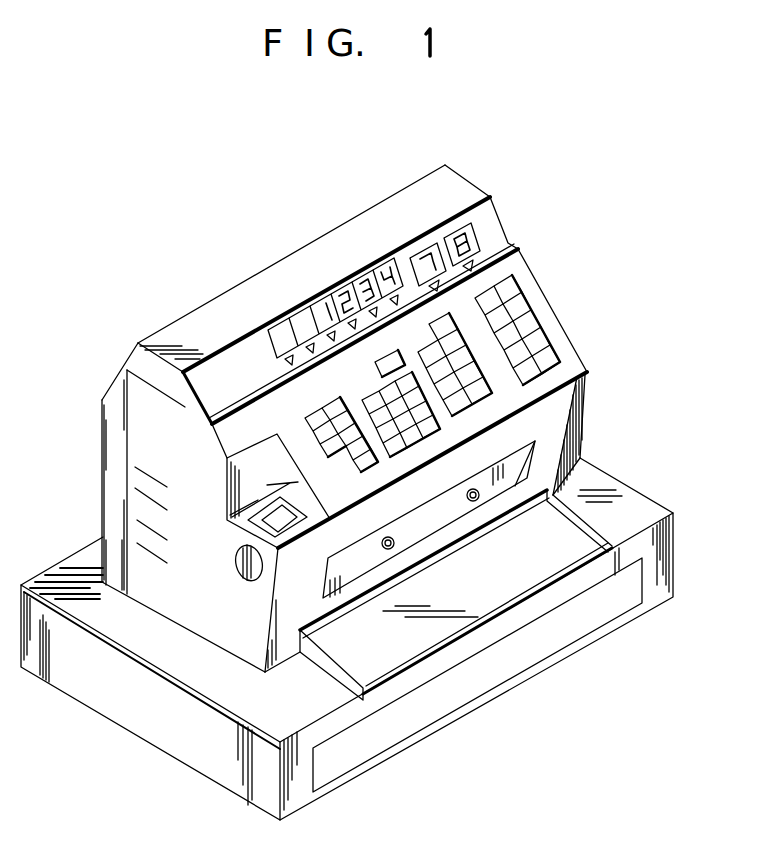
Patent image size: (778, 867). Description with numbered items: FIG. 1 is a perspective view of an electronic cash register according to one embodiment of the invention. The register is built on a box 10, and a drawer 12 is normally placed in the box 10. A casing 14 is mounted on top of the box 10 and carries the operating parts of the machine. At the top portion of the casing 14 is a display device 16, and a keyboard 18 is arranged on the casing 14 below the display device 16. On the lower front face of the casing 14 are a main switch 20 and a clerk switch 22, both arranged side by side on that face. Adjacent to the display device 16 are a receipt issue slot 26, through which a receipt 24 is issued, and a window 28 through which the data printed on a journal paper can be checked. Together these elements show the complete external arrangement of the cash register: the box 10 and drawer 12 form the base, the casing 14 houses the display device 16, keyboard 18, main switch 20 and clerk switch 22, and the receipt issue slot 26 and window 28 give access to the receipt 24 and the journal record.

The box 10 is at (608, 481).
The drawer 12 is at (604, 613).
The casing 14 is at (104, 452).
The display device 16 is at (487, 209).
The keyboard 18 is at (527, 287).
The main switch 20 is at (383, 546).
The clerk switch 22 is at (468, 498).
The receipt 24 is at (286, 488).
The receipt issue slot 26 is at (236, 516).
The window 28 is at (280, 526).